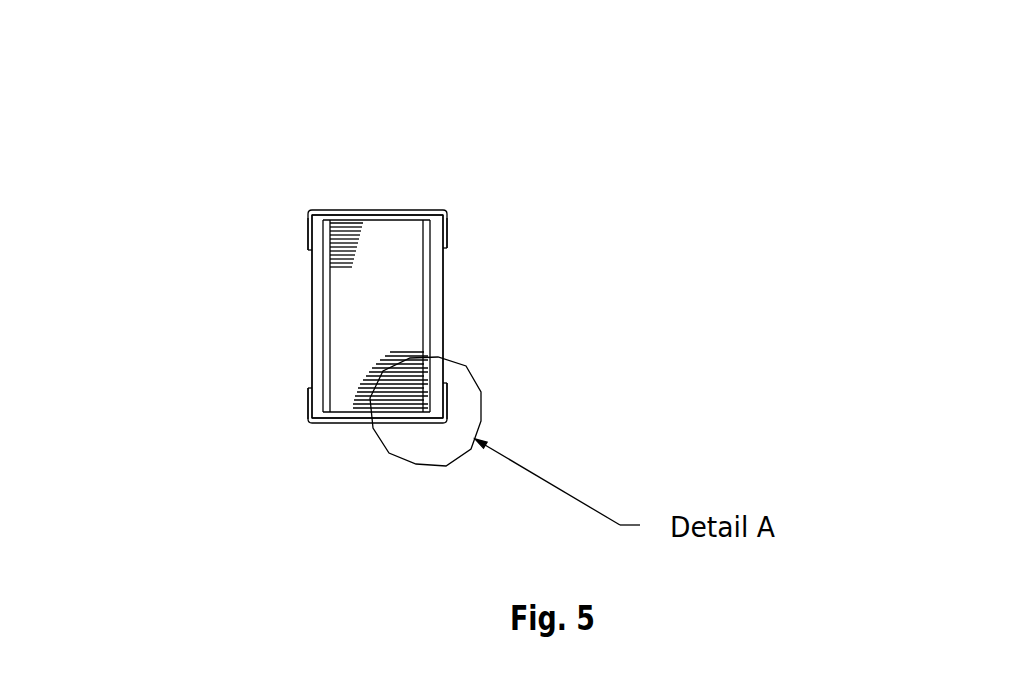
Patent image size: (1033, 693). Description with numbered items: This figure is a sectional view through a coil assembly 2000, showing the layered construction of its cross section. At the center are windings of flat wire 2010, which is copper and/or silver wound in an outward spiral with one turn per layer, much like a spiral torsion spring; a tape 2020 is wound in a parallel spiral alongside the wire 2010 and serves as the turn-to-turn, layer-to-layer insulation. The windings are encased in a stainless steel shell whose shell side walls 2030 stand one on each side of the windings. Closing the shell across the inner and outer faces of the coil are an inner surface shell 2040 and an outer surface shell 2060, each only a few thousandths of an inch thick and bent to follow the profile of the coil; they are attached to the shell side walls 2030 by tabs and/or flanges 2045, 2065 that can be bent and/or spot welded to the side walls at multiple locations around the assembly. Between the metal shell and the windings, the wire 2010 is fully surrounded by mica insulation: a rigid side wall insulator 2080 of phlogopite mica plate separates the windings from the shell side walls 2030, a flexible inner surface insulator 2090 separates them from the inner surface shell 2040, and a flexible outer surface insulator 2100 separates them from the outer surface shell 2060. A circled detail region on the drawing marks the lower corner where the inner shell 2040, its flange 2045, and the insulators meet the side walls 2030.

The coil assembly 2000 is at (161, 87).
The flat wire 2010 is at (329, 214).
The tape 2020 is at (367, 276).
The outer surface insulator 2100 is at (388, 200).
The outer surface shell 2060 is at (423, 199).
The tabs and/or flanges 2065 is at (458, 221).
The shell side walls 2030 is at (459, 285).
The side wall insulator 2080 is at (448, 338).
The tabs and/or flanges 2045 is at (460, 396).
The inner surface shell 2040 is at (319, 435).
The inner surface insulator 2090 is at (358, 437).